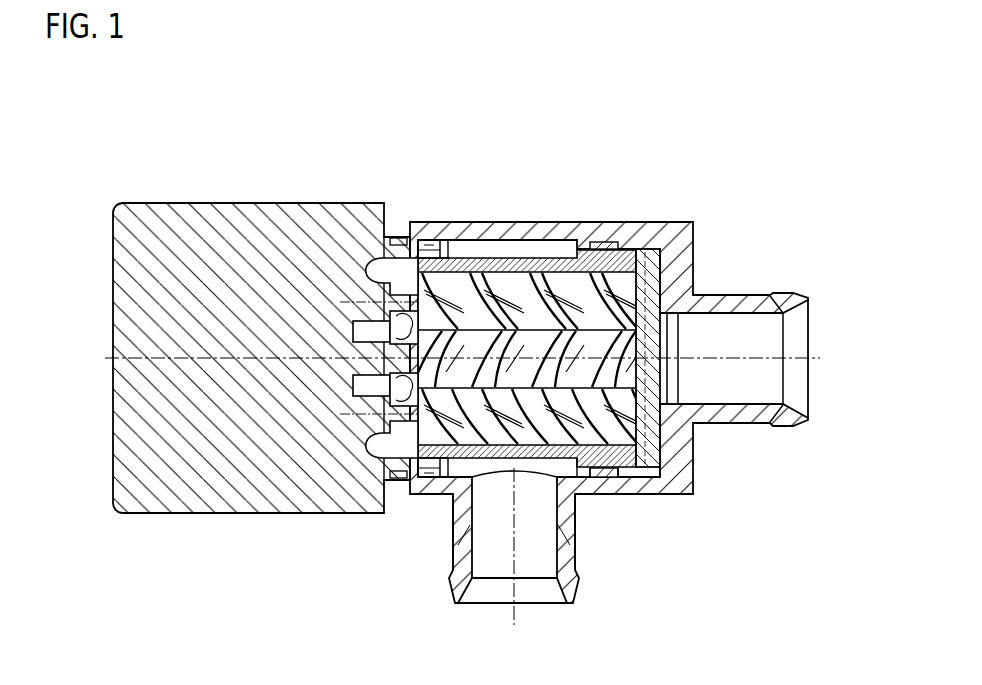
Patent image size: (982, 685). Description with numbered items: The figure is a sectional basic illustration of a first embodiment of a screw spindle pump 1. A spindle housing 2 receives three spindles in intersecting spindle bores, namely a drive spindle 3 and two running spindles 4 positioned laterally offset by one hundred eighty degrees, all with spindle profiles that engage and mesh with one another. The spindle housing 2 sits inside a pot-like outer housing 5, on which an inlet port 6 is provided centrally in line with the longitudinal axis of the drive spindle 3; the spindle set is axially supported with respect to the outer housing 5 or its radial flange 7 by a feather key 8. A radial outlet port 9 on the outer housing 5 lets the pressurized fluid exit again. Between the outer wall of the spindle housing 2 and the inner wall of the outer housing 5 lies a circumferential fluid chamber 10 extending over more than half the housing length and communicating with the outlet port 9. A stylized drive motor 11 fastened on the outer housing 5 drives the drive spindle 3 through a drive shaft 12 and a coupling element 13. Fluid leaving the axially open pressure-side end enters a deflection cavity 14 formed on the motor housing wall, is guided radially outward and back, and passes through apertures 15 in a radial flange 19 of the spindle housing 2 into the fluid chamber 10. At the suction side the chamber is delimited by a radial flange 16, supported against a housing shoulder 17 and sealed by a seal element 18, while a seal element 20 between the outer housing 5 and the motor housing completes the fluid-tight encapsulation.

The screw spindle pump 1 is at (782, 197).
The spindle housing 2 is at (598, 232).
The drive spindle 3 is at (660, 305).
The running spindles 4 is at (643, 245).
The outer housing 5 is at (497, 233).
The inlet port 6 is at (745, 305).
The radial flange 7 is at (683, 245).
The feather key 8 is at (650, 440).
The outlet port 9 is at (461, 565).
The fluid chamber 10 is at (537, 250).
The drive motor 11 is at (260, 514).
The drive shaft 12 is at (352, 322).
The coupling element 13 is at (438, 247).
The deflection cavity 14 is at (385, 250).
The apertures 15 is at (430, 478).
The radial flange 16 is at (630, 246).
The housing shoulder 17 is at (618, 477).
The seal element 18 is at (597, 478).
The radial flange 19 is at (425, 240).
The seal element 20 is at (400, 480).